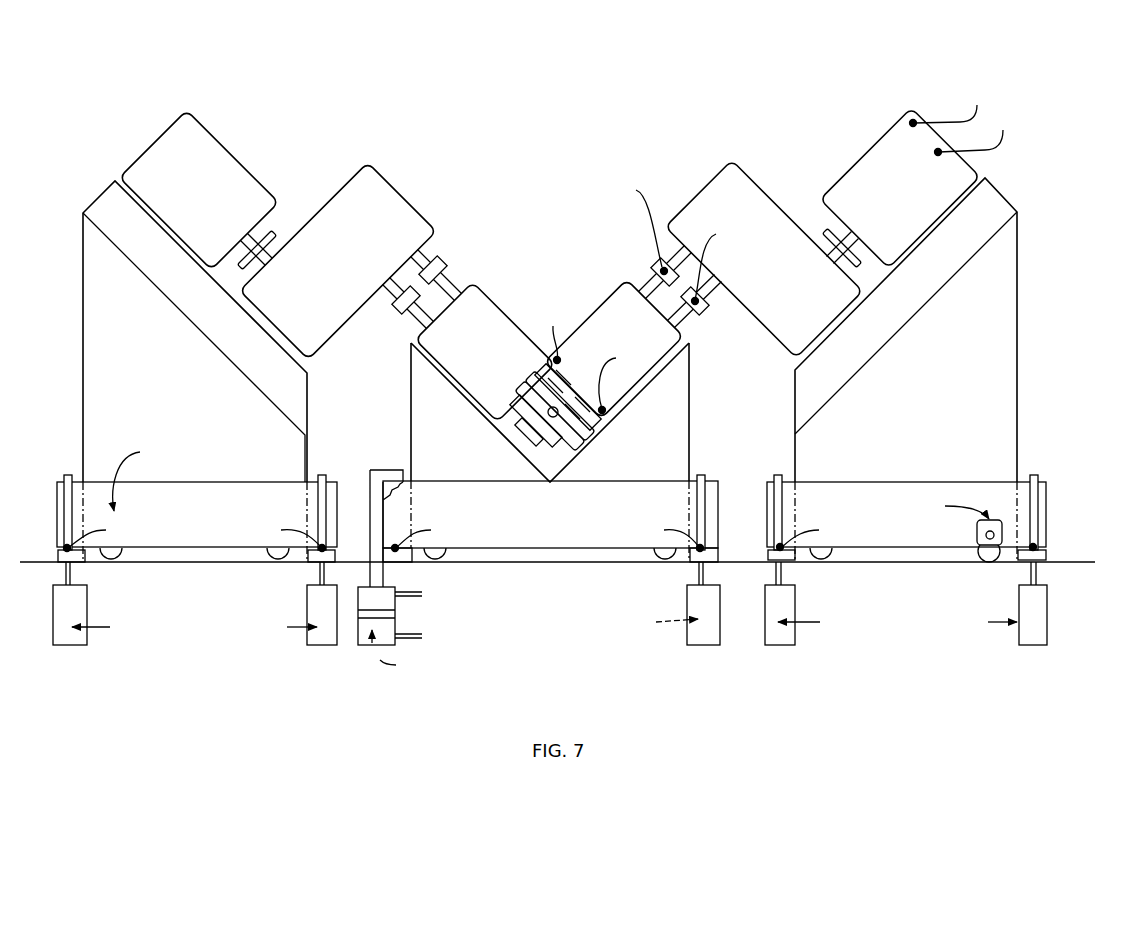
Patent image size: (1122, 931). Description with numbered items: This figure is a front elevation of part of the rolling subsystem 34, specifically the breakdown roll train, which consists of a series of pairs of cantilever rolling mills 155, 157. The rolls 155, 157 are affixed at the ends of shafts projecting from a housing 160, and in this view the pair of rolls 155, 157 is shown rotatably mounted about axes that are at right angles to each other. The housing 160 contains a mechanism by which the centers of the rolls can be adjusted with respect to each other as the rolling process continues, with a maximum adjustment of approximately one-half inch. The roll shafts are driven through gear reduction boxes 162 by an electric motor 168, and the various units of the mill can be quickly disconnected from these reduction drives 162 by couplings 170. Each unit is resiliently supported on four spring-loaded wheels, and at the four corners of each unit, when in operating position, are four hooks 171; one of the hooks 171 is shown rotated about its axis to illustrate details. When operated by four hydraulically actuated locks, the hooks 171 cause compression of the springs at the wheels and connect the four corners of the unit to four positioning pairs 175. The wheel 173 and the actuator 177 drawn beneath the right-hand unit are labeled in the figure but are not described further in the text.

The rolling subsystem 34 is at (337, 78).
The cantilever rolling mill roll 155 is at (535, 393).
The cantilever rolling mill roll 157 is at (574, 431).
The housing 160 is at (628, 382).
The gear reduction box 162 is at (707, 200).
The electric motor 168 is at (883, 155).
The coupling 170 is at (661, 269).
The hook 171 is at (1032, 475).
The roller 173 is at (987, 558).
The positioning pair 175 is at (1035, 546).
The hydraulic actuator 177 is at (1038, 600).